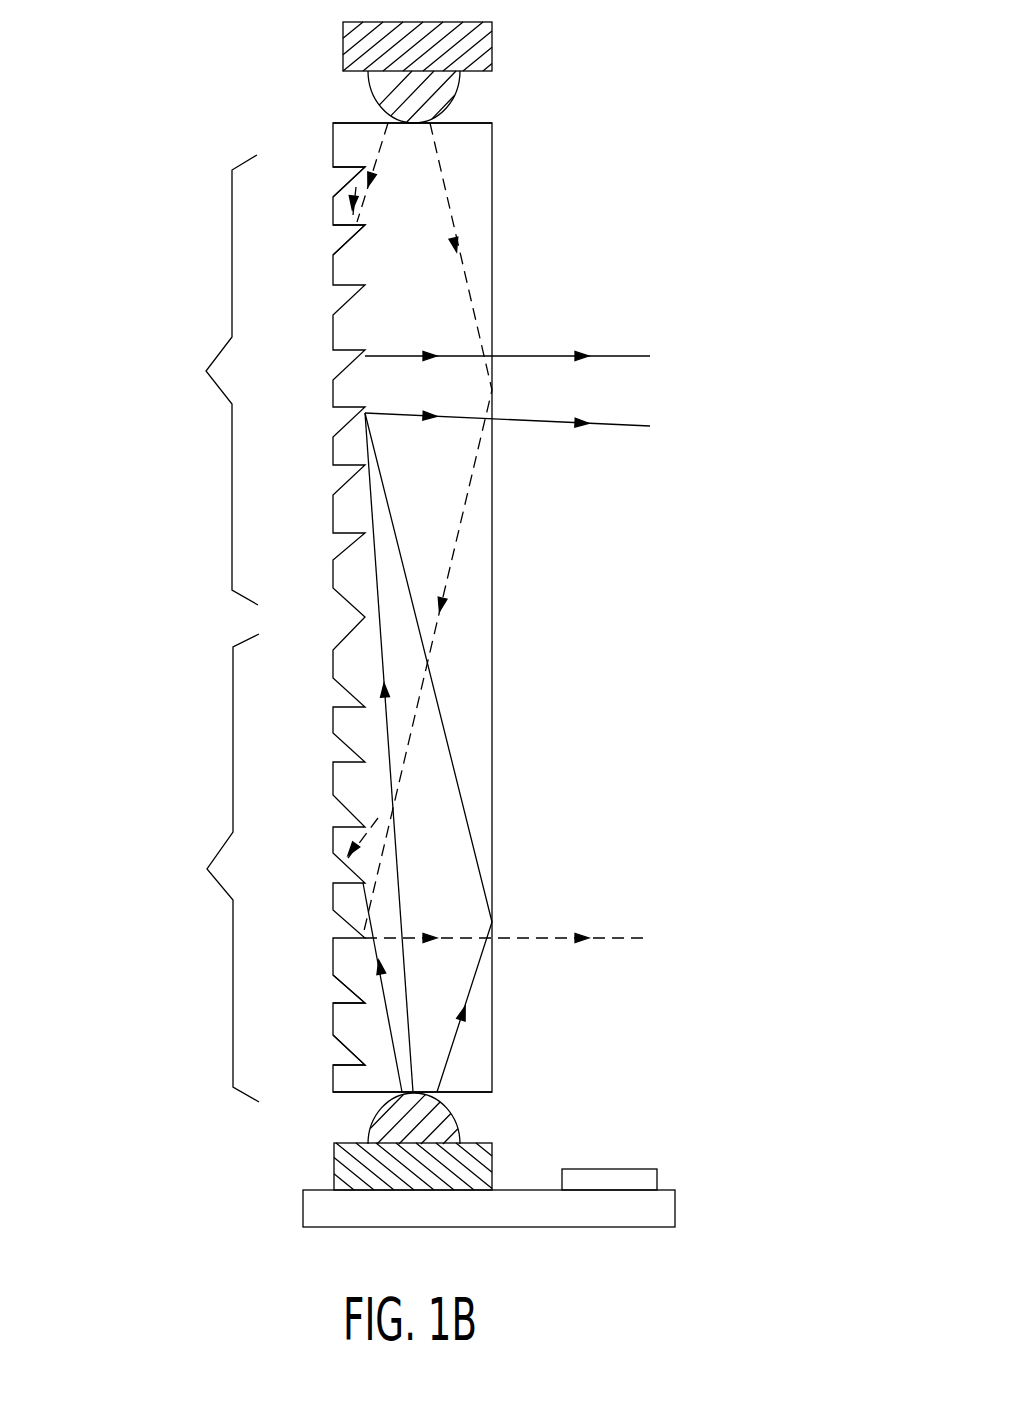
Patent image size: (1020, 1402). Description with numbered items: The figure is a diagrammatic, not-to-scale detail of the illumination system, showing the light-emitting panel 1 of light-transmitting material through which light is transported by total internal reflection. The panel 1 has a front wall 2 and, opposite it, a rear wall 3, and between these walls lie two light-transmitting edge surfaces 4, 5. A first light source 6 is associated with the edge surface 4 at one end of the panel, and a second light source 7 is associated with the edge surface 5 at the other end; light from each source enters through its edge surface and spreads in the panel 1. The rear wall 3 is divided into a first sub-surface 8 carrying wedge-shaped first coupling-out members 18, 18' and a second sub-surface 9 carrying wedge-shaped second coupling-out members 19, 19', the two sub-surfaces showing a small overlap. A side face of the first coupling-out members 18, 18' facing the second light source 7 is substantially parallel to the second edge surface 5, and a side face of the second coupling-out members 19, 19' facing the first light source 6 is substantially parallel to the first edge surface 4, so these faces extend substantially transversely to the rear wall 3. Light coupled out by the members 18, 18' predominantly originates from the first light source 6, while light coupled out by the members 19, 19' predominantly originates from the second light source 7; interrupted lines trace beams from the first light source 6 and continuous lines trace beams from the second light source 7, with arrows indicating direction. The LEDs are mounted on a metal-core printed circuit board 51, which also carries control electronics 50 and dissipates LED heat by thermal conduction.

The light-emitting panel 1 is at (630, 571).
The front wall 2 is at (493, 1034).
The rear wall 3 is at (332, 1078).
The edge surface 4 is at (350, 123).
The edge surface 5 is at (455, 1097).
The light source 6 is at (433, 92).
The light source 7 is at (388, 1122).
The first sub-surface 8 is at (190, 879).
The second sub-surface 9 is at (190, 385).
The first coupling-out member 18 is at (321, 1053).
The first coupling-out member 18' is at (321, 994).
The second coupling-out member 19 is at (321, 186).
The second coupling-out member 19' is at (321, 244).
The control electronics 50 is at (618, 1170).
The printed circuit board 51 is at (675, 1205).